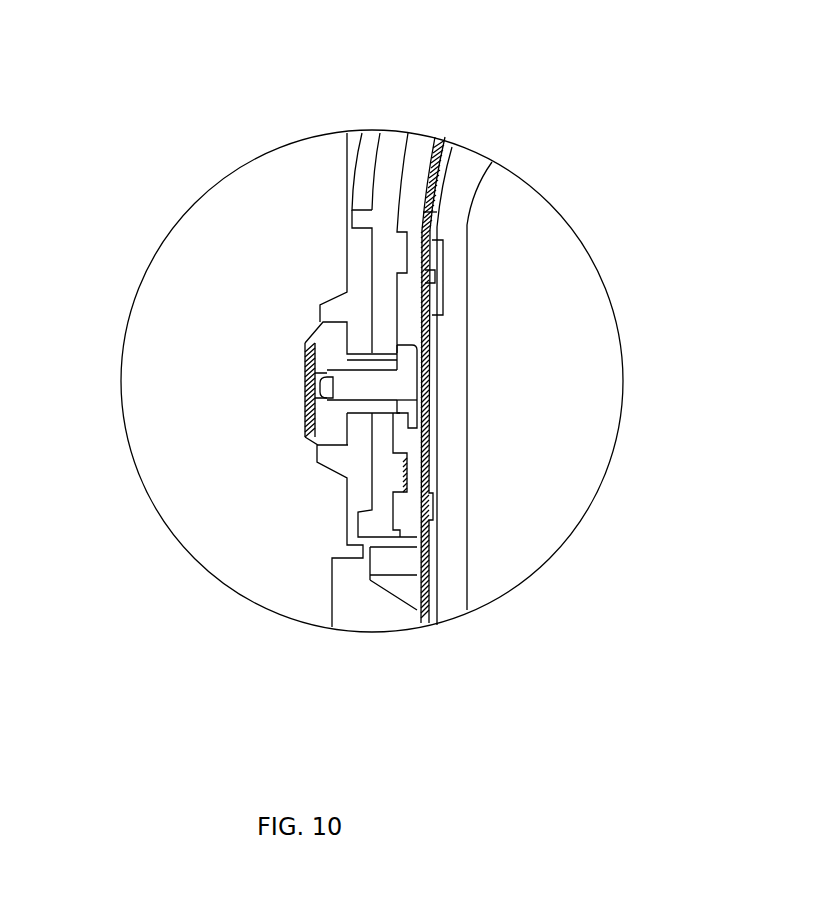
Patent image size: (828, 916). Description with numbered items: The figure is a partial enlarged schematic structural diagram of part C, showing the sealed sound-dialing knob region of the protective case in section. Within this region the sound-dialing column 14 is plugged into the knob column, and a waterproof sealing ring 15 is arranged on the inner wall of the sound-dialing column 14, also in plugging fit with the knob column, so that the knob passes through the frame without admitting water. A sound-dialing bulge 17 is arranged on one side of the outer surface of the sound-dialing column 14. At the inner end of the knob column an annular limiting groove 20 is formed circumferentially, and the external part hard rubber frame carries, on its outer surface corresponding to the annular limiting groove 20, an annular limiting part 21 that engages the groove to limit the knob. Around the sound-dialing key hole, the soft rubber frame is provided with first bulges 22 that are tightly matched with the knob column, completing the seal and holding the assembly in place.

The part C is at (207, 387).
The sound-dialing column 14 is at (360, 383).
The waterproof sealing ring 15 is at (407, 407).
The sound-dialing bulge 17 is at (422, 368).
The annular limiting groove 20 is at (393, 353).
The annular limiting part 21 is at (406, 350).
The first bulge 22 is at (353, 353).